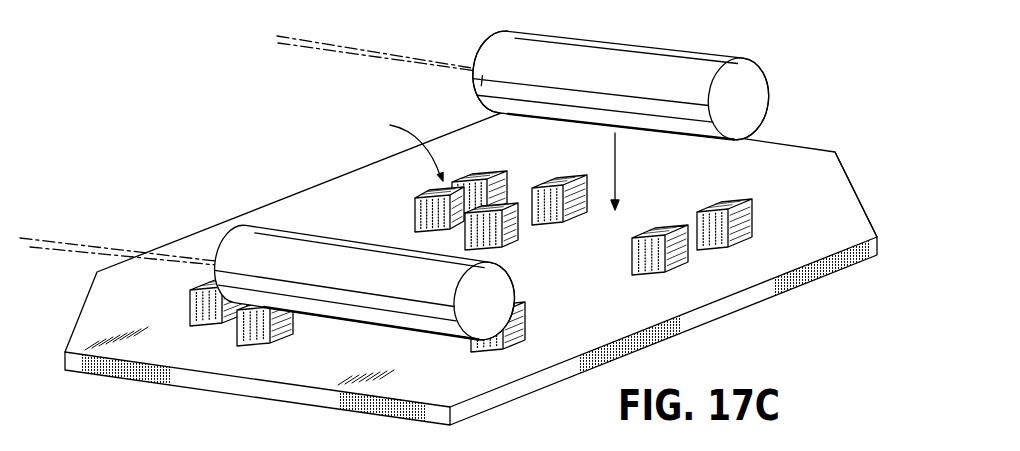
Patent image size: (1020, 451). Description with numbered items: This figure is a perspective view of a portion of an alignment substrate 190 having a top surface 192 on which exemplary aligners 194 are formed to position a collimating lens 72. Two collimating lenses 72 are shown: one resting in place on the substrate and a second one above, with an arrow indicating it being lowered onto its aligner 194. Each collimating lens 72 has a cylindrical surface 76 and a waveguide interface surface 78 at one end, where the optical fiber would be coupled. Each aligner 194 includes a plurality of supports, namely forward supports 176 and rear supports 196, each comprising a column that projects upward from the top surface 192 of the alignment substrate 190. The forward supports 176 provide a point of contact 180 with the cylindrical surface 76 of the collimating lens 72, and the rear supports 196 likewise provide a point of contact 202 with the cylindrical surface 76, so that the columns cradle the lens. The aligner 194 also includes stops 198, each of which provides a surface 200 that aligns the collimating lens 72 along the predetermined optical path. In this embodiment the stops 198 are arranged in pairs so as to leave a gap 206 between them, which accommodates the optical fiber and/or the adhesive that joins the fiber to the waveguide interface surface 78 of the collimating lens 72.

The collimating lens 72 is at (733, 62).
The cylindrical surface 76 is at (481, 84).
The waveguide interface surface 78 is at (481, 46).
The forward support 176 is at (735, 216).
The point of contact 180 is at (697, 225).
The alignment substrate 190 is at (820, 149).
The top surface 192 is at (846, 238).
The aligner 194 is at (635, 177).
The rear support 196 is at (552, 181).
The stop 198 is at (163, 303).
The surface 200 is at (480, 198).
The point of contact 202 is at (512, 213).
The gap 206 is at (395, 143).